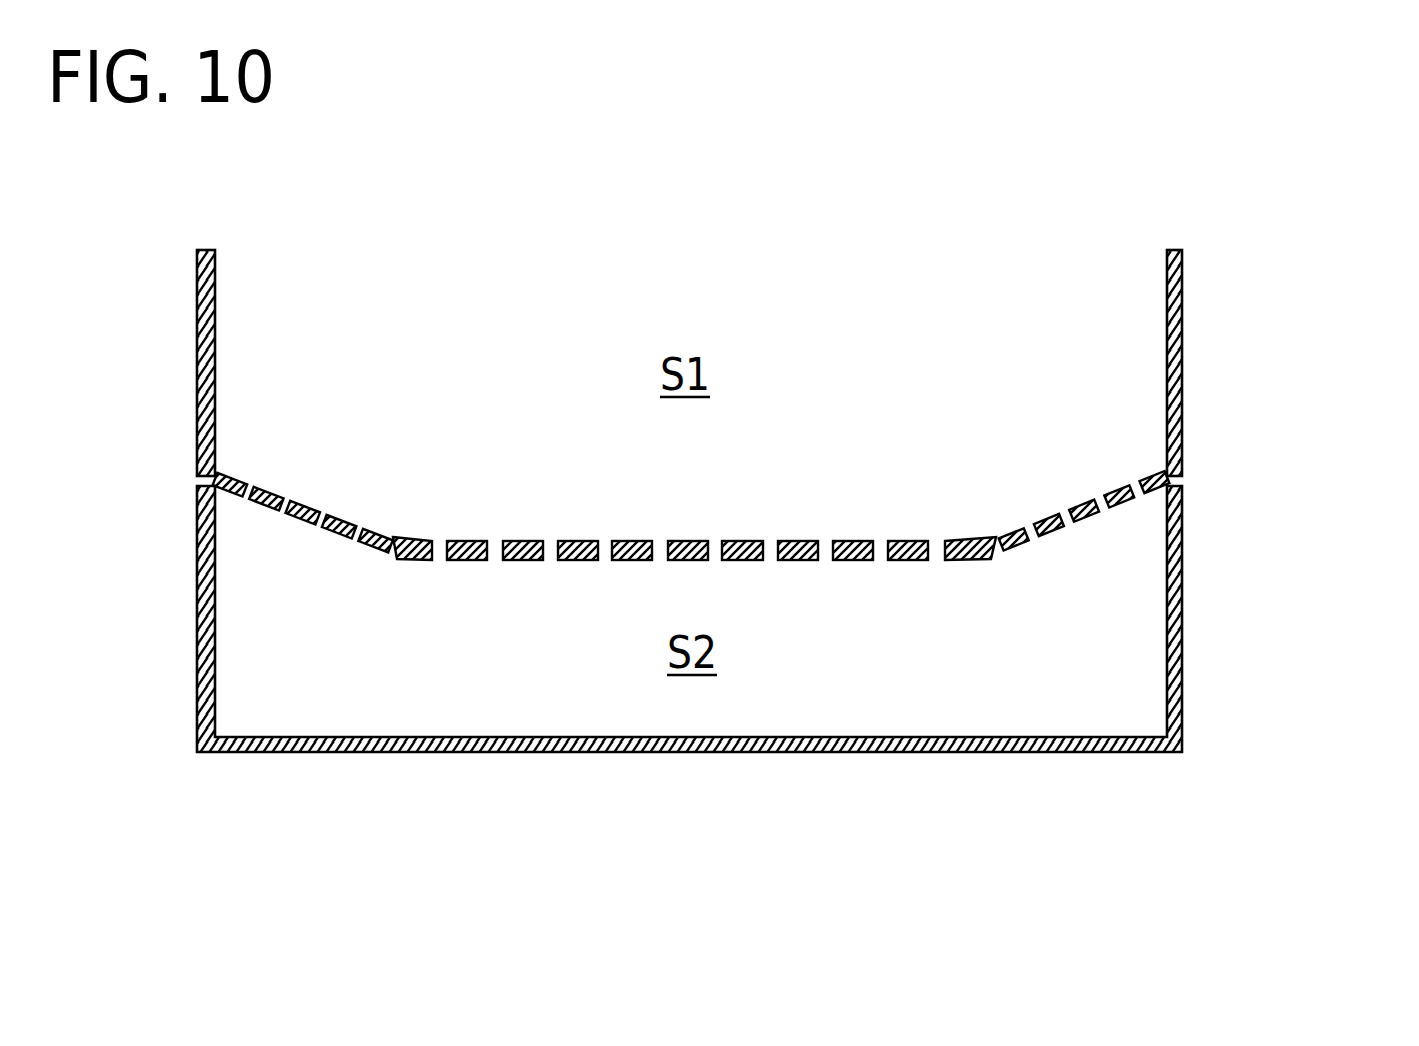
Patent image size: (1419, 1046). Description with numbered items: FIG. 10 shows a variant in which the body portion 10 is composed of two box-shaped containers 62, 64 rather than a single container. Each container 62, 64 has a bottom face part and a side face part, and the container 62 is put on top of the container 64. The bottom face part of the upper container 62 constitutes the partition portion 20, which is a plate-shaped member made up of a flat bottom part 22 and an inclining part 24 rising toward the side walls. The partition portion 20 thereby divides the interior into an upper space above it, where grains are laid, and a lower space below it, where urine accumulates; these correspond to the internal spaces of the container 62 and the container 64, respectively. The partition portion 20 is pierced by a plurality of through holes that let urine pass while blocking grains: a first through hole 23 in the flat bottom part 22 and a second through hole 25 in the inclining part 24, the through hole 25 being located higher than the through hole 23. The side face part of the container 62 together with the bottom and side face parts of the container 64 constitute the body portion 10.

The body portion 10 is at (808, 501).
The container 62 is at (1183, 348).
The container 64 is at (1183, 602).
The partition portion 20 is at (691, 461).
The bottom part 22 is at (748, 540).
The inclining part 24 is at (342, 516).
The through hole 23 is at (546, 548).
The through hole 25 is at (286, 503).